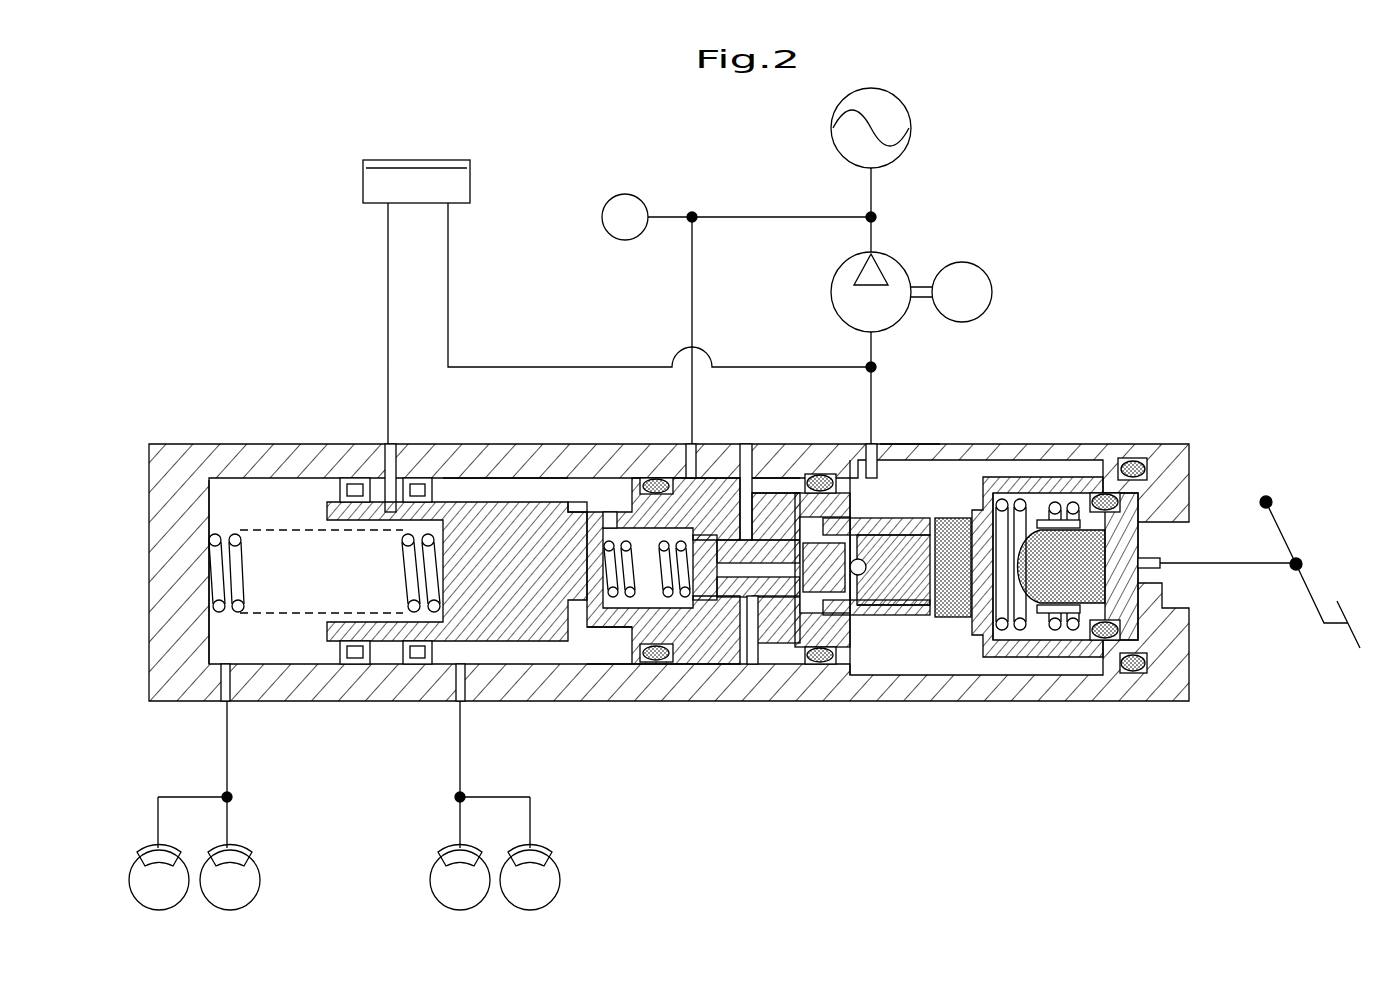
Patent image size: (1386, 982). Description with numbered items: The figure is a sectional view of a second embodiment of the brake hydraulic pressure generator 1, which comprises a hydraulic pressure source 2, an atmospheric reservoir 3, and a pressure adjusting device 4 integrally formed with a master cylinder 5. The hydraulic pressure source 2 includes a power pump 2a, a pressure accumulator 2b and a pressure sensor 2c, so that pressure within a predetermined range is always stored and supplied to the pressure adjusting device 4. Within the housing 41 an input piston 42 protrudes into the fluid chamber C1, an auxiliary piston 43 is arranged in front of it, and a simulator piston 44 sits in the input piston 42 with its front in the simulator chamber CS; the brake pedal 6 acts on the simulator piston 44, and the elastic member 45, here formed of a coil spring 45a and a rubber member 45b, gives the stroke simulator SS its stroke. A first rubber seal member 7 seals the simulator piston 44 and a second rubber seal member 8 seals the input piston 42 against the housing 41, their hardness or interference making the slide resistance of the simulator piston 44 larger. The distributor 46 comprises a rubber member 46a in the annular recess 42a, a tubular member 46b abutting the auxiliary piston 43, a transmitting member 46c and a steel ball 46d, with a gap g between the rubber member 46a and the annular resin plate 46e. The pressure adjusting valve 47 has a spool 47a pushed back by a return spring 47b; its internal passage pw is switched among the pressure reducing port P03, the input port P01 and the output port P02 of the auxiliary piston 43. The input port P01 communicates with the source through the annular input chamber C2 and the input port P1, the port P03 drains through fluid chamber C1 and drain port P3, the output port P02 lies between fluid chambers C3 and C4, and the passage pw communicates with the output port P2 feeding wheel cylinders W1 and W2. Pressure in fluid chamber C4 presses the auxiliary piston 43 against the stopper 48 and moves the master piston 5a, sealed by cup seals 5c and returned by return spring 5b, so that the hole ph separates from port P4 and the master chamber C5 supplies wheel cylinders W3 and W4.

The brake hydraulic pressure control device 1 is at (703, 488).
The hydraulic pressure source 2 is at (797, 261).
The power pump 2a is at (898, 268).
The pressure accumulator 2b is at (890, 108).
The pressure sensor 2c is at (624, 194).
The atmospheric reservoir 3 is at (470, 178).
The pressure adjusting device 4 is at (896, 584).
The master cylinder 5 is at (385, 564).
The master piston 5a is at (490, 512).
The return spring 5b is at (185, 702).
The cup seals 5c is at (385, 702).
The brake pedal 6 is at (1352, 612).
The first rubber seal member 7 is at (1140, 500).
The second rubber seal member 8 is at (1150, 672).
The housing 41 is at (1187, 647).
The input piston 42 is at (1122, 642).
The annular recess 42a is at (918, 528).
The auxiliary piston 43 is at (640, 627).
The simulator piston 44 is at (1140, 560).
The elastic member 45 is at (1082, 478).
The coil spring 45a is at (1045, 502).
The rubber member 45b is at (1082, 530).
The distributor 46 is at (896, 584).
The rubber member 46a is at (934, 605).
The tubular member 46b is at (806, 650).
The transmitting member 46c is at (892, 615).
The steel ball 46d is at (858, 585).
The annular resin plate 46e is at (950, 620).
The pressure adjusting valve 47 is at (647, 563).
The spool 47a is at (674, 518).
The return spring 47b is at (610, 568).
The stopper 48 is at (862, 458).
The fluid chamber C1 is at (985, 470).
The annular input chamber C2 is at (760, 470).
The fluid chamber C3 is at (600, 640).
The fluid chamber C4 is at (523, 490).
The master chamber C5 is at (243, 490).
The input port P1 is at (690, 444).
The output port P2 is at (456, 702).
The drain port P3 is at (880, 444).
The port P4 is at (384, 442).
The input port P01 is at (725, 468).
The output port P02 is at (610, 505).
The pressure reducing port P03 is at (803, 470).
The hole ph is at (412, 444).
The internal passage pw is at (703, 630).
The gap g is at (928, 615).
The stroke simulator SS is at (1030, 660).
The simulator chamber CS is at (1090, 645).
The wheel cylinder W1 is at (450, 852).
The wheel cylinder W2 is at (540, 852).
The wheel cylinder W3 is at (148, 852).
The wheel cylinder W4 is at (242, 852).